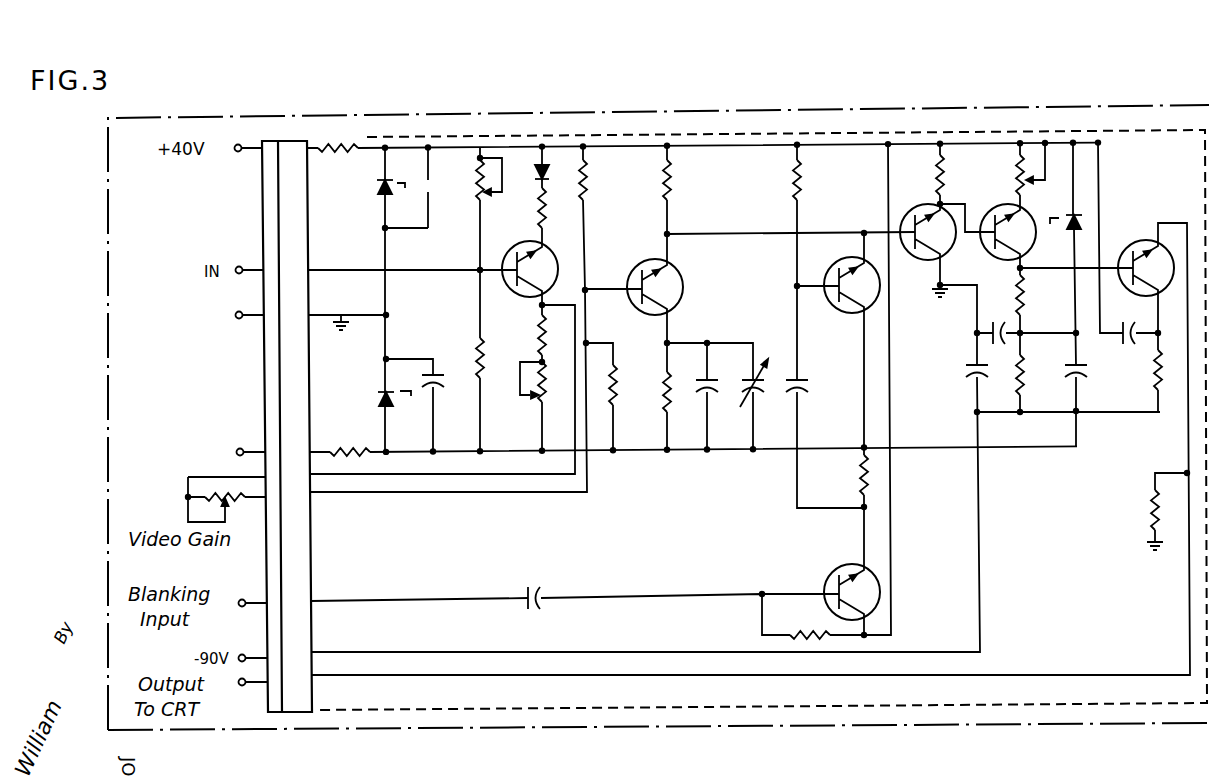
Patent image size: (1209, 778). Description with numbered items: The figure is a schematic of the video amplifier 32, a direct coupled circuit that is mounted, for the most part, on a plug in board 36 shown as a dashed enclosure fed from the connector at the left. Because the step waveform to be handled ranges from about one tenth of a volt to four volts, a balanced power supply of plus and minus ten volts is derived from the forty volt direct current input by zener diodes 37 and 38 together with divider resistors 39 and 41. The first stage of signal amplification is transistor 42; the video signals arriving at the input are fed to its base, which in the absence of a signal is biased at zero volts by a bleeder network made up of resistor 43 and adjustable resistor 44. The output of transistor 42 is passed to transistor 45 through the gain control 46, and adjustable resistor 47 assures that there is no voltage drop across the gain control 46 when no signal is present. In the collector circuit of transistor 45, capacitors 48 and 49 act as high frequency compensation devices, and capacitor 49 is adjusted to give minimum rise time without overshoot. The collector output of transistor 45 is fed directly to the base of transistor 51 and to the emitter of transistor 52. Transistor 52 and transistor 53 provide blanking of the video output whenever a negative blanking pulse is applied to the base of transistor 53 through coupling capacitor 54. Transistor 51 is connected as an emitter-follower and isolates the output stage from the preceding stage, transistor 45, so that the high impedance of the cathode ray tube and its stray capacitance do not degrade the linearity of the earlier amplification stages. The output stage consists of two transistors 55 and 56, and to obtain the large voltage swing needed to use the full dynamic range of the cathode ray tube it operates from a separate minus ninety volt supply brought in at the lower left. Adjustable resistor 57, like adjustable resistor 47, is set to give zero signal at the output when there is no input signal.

The video amplifier 32 is at (484, 110).
The plug in board 36 is at (622, 131).
The zener diode 37 is at (375, 186).
The zener diode 38 is at (383, 392).
The divider resistor 39 is at (327, 159).
The divider resistor 41 is at (351, 442).
The transistor 42 is at (549, 250).
The resistor 43 is at (479, 348).
The adjustable resistor 44 is at (477, 192).
The transistor 45 is at (684, 280).
The gain control 46 is at (222, 480).
The adjustable resistor 47 is at (541, 400).
The capacitor 48 is at (708, 375).
The capacitor 49 is at (746, 380).
The transistor 51 is at (933, 206).
The transistor 52 is at (828, 312).
The transistor 53 is at (826, 574).
The coupling capacitor 54 is at (534, 585).
The transistor 55 is at (1006, 205).
The transistor 56 is at (1137, 240).
The adjustable resistor 57 is at (1017, 170).